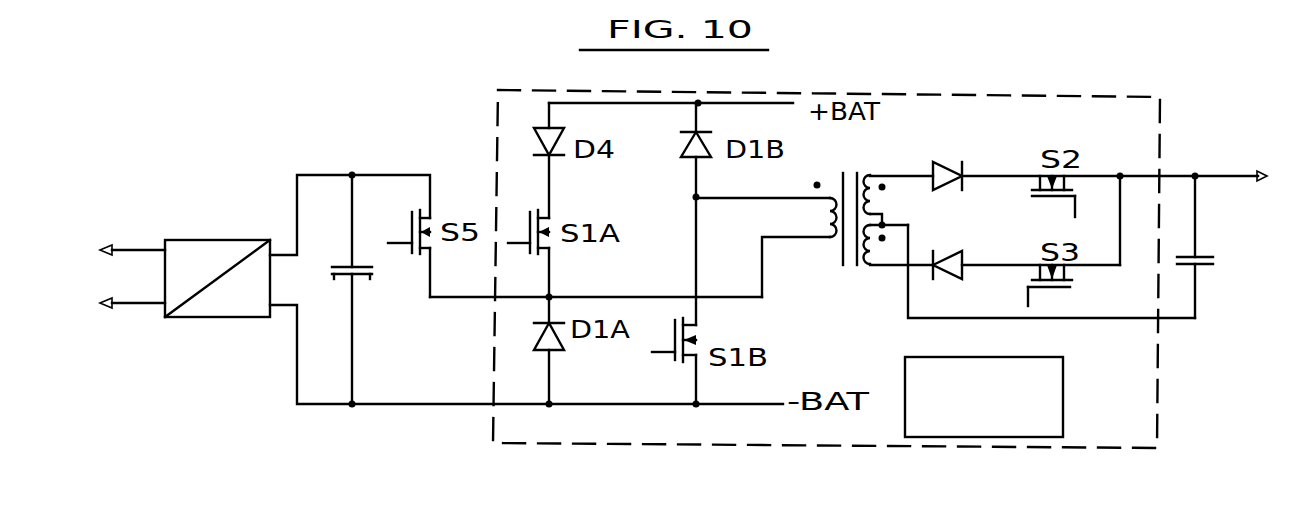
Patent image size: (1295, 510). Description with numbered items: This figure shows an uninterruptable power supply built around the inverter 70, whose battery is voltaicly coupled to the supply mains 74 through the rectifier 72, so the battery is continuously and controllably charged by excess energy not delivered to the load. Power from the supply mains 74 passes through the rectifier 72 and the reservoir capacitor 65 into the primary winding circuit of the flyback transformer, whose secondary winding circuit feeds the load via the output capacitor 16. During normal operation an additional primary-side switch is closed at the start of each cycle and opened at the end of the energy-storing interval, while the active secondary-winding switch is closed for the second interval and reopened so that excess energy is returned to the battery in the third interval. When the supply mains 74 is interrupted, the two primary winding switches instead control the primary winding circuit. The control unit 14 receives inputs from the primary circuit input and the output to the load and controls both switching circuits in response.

The control unit 14 is at (1050, 372).
The output capacitor 16 is at (1213, 242).
The reservoir capacitor 65 is at (362, 283).
The inverter 70 is at (1147, 110).
The rectifier 72 is at (192, 240).
The supply mains 74 is at (112, 240).